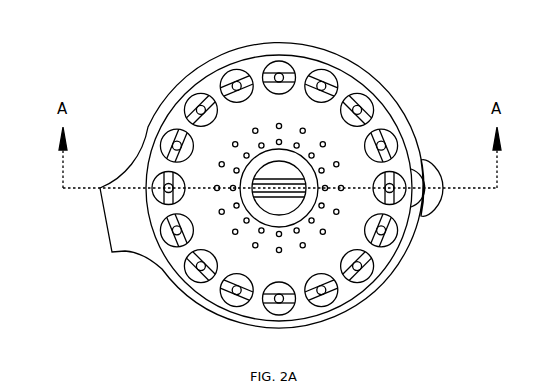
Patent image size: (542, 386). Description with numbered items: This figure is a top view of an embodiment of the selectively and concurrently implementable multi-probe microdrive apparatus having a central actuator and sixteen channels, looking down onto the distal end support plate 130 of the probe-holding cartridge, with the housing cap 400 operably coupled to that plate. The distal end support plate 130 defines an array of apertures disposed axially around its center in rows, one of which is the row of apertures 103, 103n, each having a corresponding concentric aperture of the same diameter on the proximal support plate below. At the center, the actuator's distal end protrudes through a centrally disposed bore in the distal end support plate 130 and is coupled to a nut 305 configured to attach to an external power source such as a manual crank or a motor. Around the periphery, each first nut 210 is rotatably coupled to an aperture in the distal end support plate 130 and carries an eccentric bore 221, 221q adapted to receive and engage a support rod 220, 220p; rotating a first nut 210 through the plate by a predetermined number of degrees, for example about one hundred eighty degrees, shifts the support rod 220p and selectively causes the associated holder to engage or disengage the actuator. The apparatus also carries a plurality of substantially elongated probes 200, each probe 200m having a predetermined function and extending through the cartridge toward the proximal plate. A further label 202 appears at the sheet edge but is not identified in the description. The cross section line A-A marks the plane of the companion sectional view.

The aperture 103n is at (201, 91).
The aperture 103 is at (250, 145).
The distal end support plate 130 is at (283, 97).
The support rod 220p is at (289, 185).
The support rod 220 is at (388, 100).
The nut 305 is at (165, 197).
The first nut 210 is at (160, 228).
The eccentric bore 221q is at (186, 316).
The eccentric bore 221 is at (226, 278).
The probe 200m is at (402, 256).
The probe 200 is at (323, 209).
The housing cap 400 is at (346, 301).
The body 202 is at (364, 382).